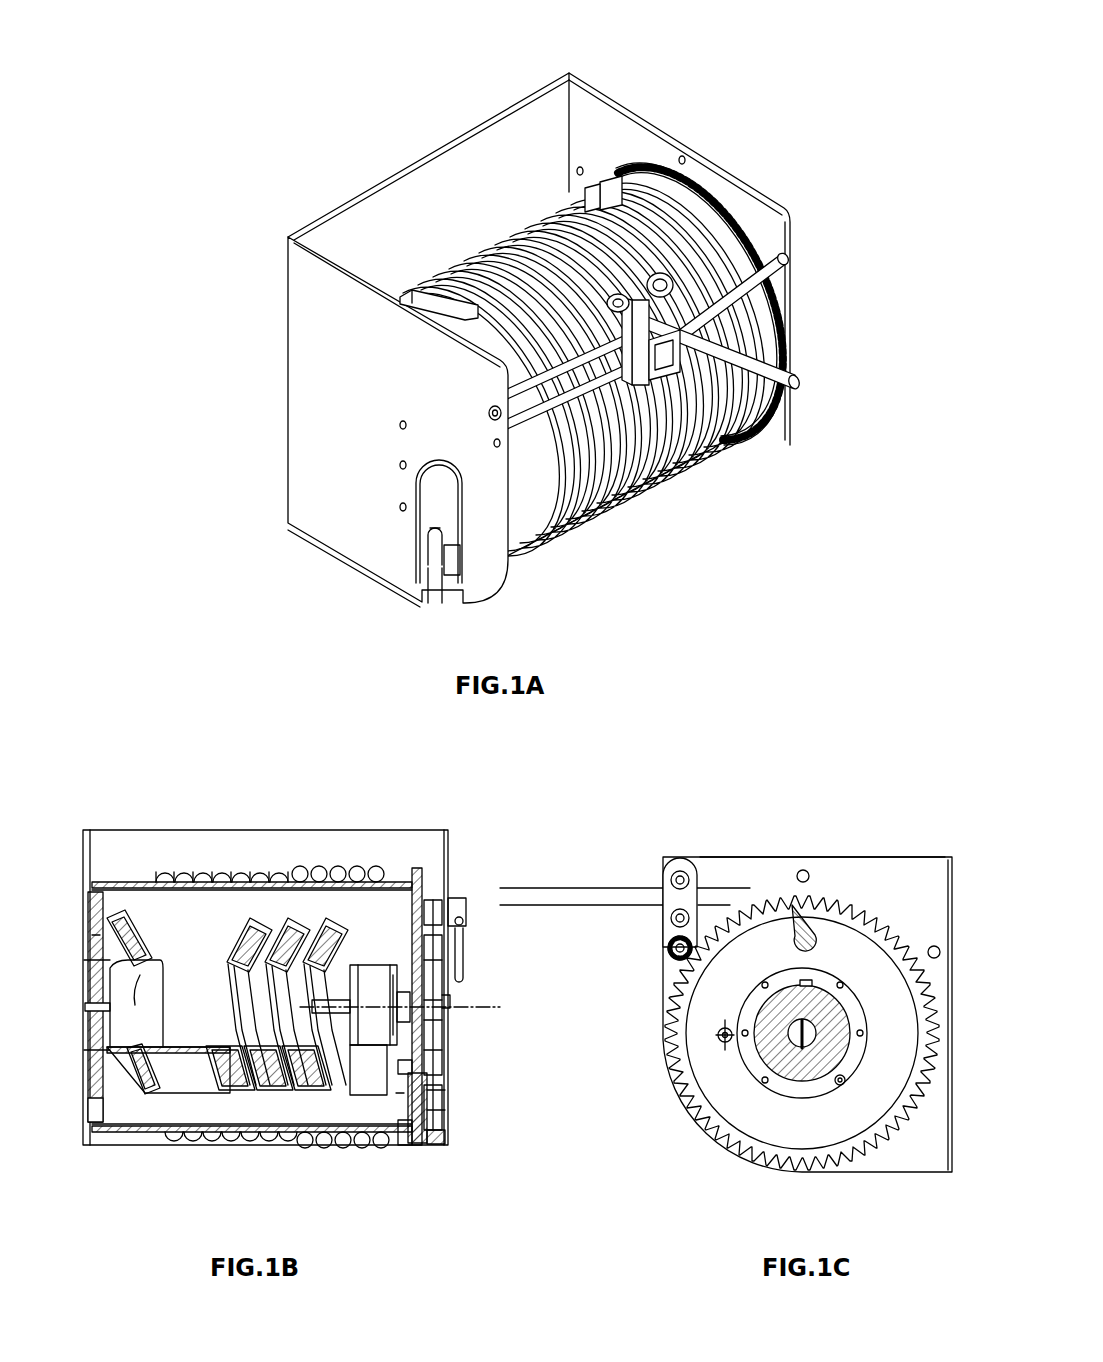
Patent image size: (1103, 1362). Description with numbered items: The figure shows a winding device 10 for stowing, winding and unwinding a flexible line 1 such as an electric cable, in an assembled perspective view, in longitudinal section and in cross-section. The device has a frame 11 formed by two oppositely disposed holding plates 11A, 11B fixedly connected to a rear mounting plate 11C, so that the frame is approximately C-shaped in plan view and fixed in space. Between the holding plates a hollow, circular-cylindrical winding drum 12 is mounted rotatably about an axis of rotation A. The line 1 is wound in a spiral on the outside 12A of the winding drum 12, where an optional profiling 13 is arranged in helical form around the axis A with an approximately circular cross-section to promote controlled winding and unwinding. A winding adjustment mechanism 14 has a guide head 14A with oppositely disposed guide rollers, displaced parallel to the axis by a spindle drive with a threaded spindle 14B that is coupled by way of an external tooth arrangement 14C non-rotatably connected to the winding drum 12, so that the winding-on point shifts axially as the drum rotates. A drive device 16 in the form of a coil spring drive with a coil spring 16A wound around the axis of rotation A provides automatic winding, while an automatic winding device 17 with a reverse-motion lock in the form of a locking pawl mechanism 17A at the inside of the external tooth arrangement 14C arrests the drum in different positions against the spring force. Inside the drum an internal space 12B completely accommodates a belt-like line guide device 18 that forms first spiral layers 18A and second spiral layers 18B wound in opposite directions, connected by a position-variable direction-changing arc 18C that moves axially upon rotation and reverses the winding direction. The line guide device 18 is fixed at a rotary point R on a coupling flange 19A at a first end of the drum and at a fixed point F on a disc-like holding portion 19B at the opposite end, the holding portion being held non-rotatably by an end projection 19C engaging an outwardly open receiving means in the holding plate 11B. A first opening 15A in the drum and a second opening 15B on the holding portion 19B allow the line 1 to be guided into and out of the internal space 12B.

In FIG. 1A, the flexible line 1 is at (793, 378).
In FIG. 1B, the flexible line 1 is at (332, 935).
In FIG. 1C, the flexible line 1 is at (588, 888).
In FIG. 1A, the winding device 10 is at (290, 120).
In FIG. 1A, the frame 11 is at (592, 70).
In FIG. 1A, the holding plate 11A is at (630, 120).
In FIG. 1B, the holding plate 11A is at (453, 852).
In FIG. 1A, the holding plate 11B is at (315, 522).
In FIG. 1B, the holding plate 11B is at (83, 1132).
In FIG. 1C, the holding plate 11B is at (733, 868).
In FIG. 1A, the rear mounting plate 11C is at (437, 180).
In FIG. 1C, the rear mounting plate 11C is at (948, 1148).
In FIG. 1A, the winding drum 12 is at (530, 500).
In FIG. 1B, the winding drum 12 is at (130, 880).
In FIG. 1B, the outside of the winding drum 12A is at (130, 1150).
In FIG. 1B, the internal space 12B is at (212, 938).
In FIG. 1A, the profiling 13 is at (632, 512).
In FIG. 1B, the profiling 13 is at (242, 866).
In FIG. 1C, the winding adjustment mechanism 14 is at (655, 874).
In FIG. 1A, the guide head 14A is at (700, 380).
In FIG. 1C, the guide head 14A is at (695, 862).
In FIG. 1A, the threaded spindle 14B is at (793, 300).
In FIG. 1C, the threaded spindle 14B is at (668, 947).
In FIG. 1C, the external tooth arrangement 14C is at (886, 912).
In FIG. 1A, the first opening 15A is at (628, 190).
In FIG. 1A, the second opening 15B is at (440, 565).
In FIG. 1B, the drive device 16 is at (436, 1158).
In FIG. 1B, the coil spring 16A is at (450, 1085).
In FIG. 1B, the automatic winding device 17 is at (470, 880).
In FIG. 1C, the automatic winding device 17 is at (697, 1062).
In FIG. 1C, the locking pawl mechanism 17A is at (774, 956).
In FIG. 1B, the line guide device 18 is at (253, 1056).
In FIG. 1B, the first spiral layers 18A is at (138, 1098).
In FIG. 1B, the second spiral layers 18B is at (400, 1090).
In FIG. 1B, the direction-changing arc 18C is at (185, 1055).
In FIG. 1B, the coupling flange 19A is at (450, 1137).
In FIG. 1B, the holding portion 19B is at (95, 1080).
In FIG. 1A, the end projection 19C is at (432, 497).
In FIG. 1B, the axis of rotation A is at (476, 1012).
In FIG. 1B, the fixed point F is at (93, 935).
In FIG. 1B, the rotary point R is at (380, 935).